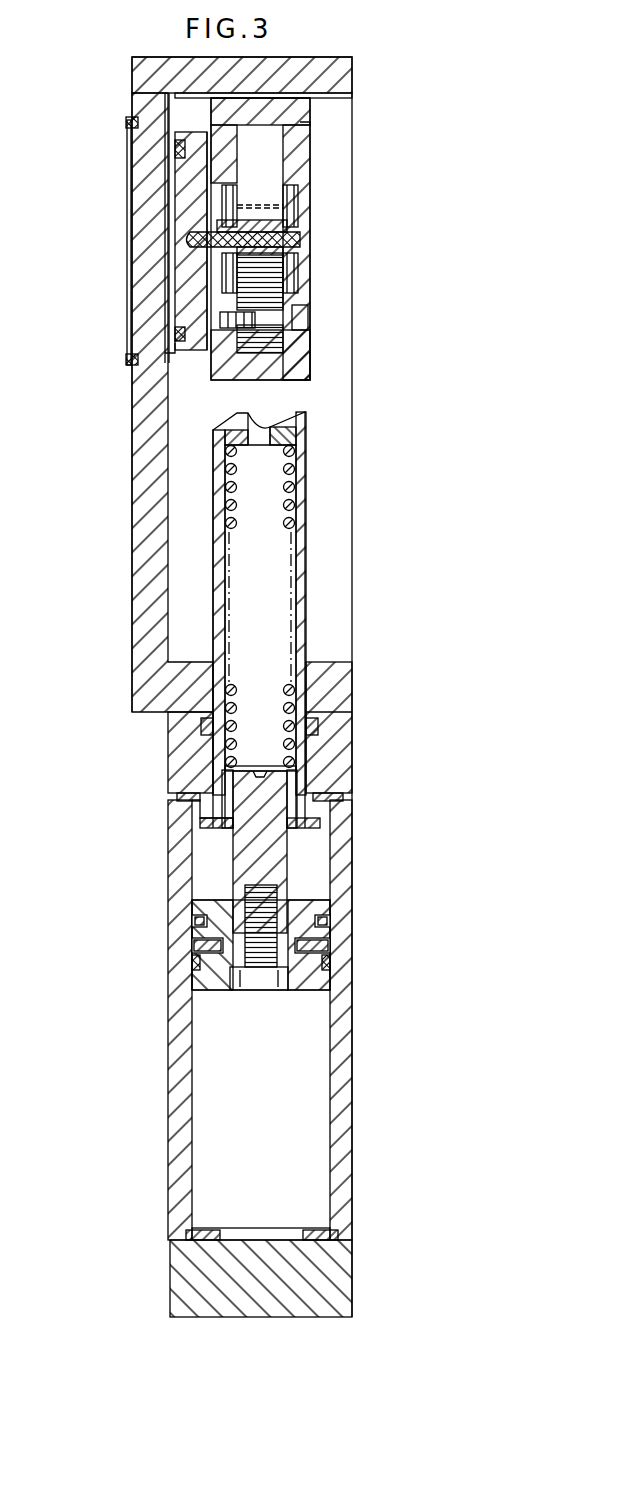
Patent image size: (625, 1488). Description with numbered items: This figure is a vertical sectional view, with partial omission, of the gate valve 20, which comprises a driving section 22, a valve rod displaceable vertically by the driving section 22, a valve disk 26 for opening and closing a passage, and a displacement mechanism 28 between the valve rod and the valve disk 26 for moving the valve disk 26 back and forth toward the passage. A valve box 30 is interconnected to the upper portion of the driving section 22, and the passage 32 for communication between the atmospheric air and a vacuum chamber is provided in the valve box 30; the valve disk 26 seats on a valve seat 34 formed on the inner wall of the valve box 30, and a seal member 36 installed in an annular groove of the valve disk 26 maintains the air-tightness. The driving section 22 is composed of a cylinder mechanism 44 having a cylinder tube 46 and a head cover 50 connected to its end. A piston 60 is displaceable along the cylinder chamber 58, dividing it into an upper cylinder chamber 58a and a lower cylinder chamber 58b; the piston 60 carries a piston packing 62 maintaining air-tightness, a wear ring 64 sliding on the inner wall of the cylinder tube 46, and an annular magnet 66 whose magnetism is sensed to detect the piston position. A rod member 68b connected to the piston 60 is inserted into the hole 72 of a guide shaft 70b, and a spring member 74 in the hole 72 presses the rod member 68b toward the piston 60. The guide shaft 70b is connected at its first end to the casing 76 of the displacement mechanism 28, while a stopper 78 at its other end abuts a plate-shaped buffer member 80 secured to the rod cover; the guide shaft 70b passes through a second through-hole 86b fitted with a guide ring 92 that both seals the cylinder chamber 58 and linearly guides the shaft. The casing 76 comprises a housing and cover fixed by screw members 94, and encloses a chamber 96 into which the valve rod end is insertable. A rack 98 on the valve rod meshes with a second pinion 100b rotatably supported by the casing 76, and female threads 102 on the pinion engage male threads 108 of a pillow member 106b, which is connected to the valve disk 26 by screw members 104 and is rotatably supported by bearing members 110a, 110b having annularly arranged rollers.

The gate valve 20 is at (512, 83).
The driving section 22 is at (357, 1052).
The valve disk 26 is at (176, 268).
The displacement mechanism 28 is at (312, 155).
The valve box 30 is at (150, 442).
The passage 32 is at (128, 160).
The valve seat 34 is at (127, 359).
The seal member 36 is at (127, 122).
The cylinder mechanism 44 is at (301, 882).
The cylinder tube 46 is at (340, 1078).
The head cover 50 is at (192, 1273).
The cylinder chamber 58 is at (272, 1119).
The upper cylinder chamber 58a is at (212, 877).
The lower cylinder chamber 58b is at (217, 1058).
The piston 60 is at (305, 978).
The piston packing 62 is at (316, 921).
The wear ring 64 is at (327, 948).
The annular magnet 66 is at (331, 964).
The rod member 68b is at (258, 848).
The guide shaft 70b is at (302, 452).
The hole 72 is at (302, 593).
The spring member 74 is at (302, 522).
The casing 76 is at (284, 110).
The stopper 78 is at (328, 809).
The buffer member 80 is at (178, 797).
The second through-hole 86b is at (310, 766).
The guide ring 92 is at (312, 728).
The screw member 94 is at (300, 320).
The chamber 96 is at (302, 167).
The rack 98 is at (300, 348).
The second pinion 100b is at (300, 278).
The female threads 102 is at (300, 234).
The screw member 104 is at (186, 240).
The pillow member 106b is at (195, 218).
The male threads 108 is at (232, 285).
The bearing member 110a is at (221, 205).
The bearing member 110b is at (299, 198).